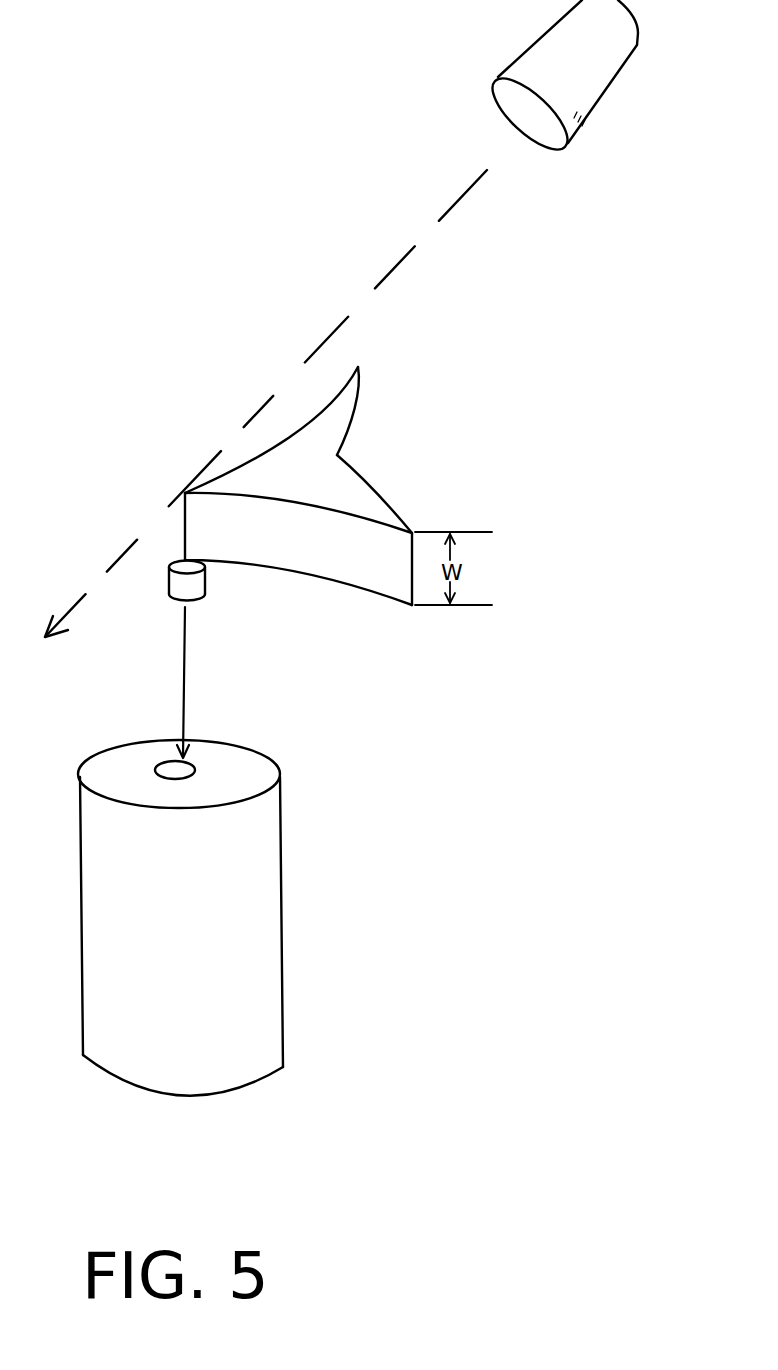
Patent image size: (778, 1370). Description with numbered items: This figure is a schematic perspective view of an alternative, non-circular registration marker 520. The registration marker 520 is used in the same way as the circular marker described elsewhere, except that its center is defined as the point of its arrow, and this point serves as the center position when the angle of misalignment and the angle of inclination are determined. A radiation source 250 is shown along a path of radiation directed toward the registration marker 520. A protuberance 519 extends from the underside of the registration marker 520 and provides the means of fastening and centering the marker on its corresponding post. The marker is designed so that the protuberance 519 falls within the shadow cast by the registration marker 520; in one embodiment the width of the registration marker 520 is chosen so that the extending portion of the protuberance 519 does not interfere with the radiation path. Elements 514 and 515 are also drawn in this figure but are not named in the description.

The radiation source 250 is at (612, 65).
The registration marker 520 is at (333, 428).
The protuberance 519 is at (193, 588).
The hole / aperture 514 is at (185, 768).
The receptacle cylinder 515 is at (273, 870).